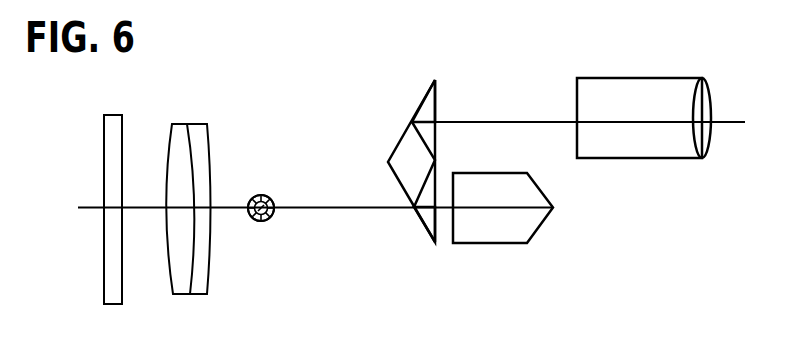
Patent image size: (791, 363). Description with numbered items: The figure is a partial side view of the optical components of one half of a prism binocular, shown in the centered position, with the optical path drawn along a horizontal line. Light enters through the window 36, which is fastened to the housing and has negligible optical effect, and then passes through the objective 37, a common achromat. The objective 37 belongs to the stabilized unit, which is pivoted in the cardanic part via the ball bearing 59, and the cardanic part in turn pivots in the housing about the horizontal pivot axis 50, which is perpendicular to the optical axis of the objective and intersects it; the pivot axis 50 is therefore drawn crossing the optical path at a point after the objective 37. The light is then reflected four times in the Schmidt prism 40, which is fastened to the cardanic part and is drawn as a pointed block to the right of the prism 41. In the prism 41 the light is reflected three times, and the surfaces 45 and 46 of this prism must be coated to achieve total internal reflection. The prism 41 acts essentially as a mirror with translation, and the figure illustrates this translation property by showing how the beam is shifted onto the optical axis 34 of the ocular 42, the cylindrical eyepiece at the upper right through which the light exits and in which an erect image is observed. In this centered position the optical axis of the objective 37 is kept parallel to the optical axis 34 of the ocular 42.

The optical axis 34 is at (502, 124).
The window 36 is at (117, 113).
The objective 37 is at (180, 130).
The Schmidt prism 40 is at (507, 244).
The prism 41 is at (427, 110).
The ocular 42 is at (628, 159).
The surface 45 is at (423, 228).
The surface 46 is at (398, 142).
The pivot axis 50 is at (257, 221).
The ball bearing 59 is at (271, 197).